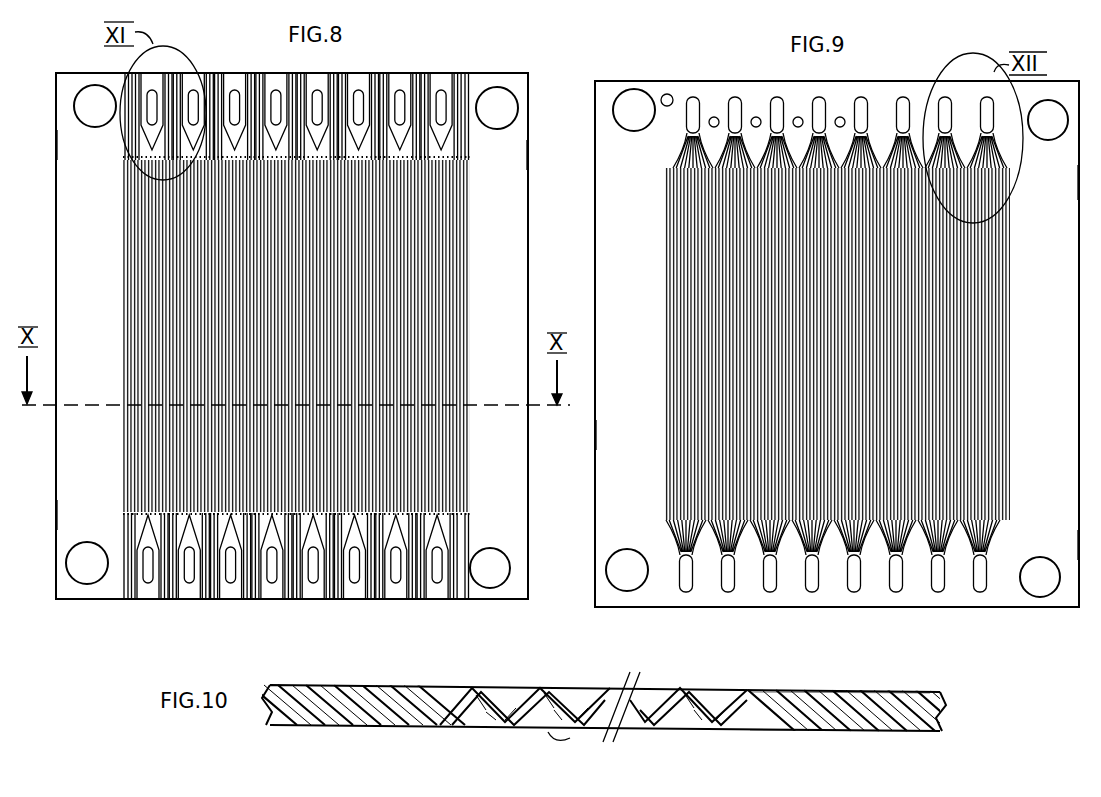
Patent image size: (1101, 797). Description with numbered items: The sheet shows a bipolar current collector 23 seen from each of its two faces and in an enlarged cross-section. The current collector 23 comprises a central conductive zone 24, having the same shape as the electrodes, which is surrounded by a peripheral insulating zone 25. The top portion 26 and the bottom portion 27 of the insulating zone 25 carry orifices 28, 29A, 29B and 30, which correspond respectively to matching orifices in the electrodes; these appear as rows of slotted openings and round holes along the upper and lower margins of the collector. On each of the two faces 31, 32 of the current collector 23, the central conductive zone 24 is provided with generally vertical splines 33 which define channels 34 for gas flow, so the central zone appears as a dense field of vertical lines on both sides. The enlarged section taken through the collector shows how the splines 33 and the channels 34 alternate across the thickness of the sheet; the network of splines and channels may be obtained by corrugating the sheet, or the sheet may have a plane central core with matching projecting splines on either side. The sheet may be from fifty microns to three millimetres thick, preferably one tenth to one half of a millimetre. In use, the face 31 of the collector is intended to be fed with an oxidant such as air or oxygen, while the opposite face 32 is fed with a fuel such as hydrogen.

In FIG. 8, the current collector 23 is at (84, 66).
In FIG. 9, the current collector 23 is at (640, 76).
In FIG. 10, the current collector 23 is at (318, 695).
In FIG. 8, the central conductive zone 24 is at (165, 452).
In FIG. 9, the central conductive zone 24 is at (985, 326).
In FIG. 8, the peripheral insulating zone 25 is at (493, 148).
In FIG. 9, the peripheral insulating zone 25 is at (620, 432).
In FIG. 8, the top portion of the insulating zone 26 is at (100, 140).
In FIG. 9, the top portion of the insulating zone 26 is at (1063, 194).
In FIG. 8, the bottom portion of the insulating zone 27 is at (95, 510).
In FIG. 9, the bottom portion of the insulating zone 27 is at (1045, 540).
In FIG. 8, the orifices 28 is at (196, 97).
In FIG. 9, the orifices 28 is at (736, 118).
In FIG. 8, the orifice 29A is at (90, 106).
In FIG. 9, the orifice 29A is at (1050, 118).
In FIG. 8, the orifice 29B is at (492, 568).
In FIG. 9, the orifice 29B is at (626, 570).
In FIG. 8, the orifice 30 is at (500, 104).
In FIG. 9, the orifice 30 is at (630, 112).
In FIG. 8, the face of the collector 31 is at (90, 205).
In FIG. 10, the face of the collector 31 is at (900, 735).
In FIG. 9, the face of the collector 32 is at (633, 205).
In FIG. 10, the face of the collector 32 is at (912, 690).
In FIG. 10, the splines 33 is at (540, 700).
In FIG. 10, the channels 34 is at (478, 700).